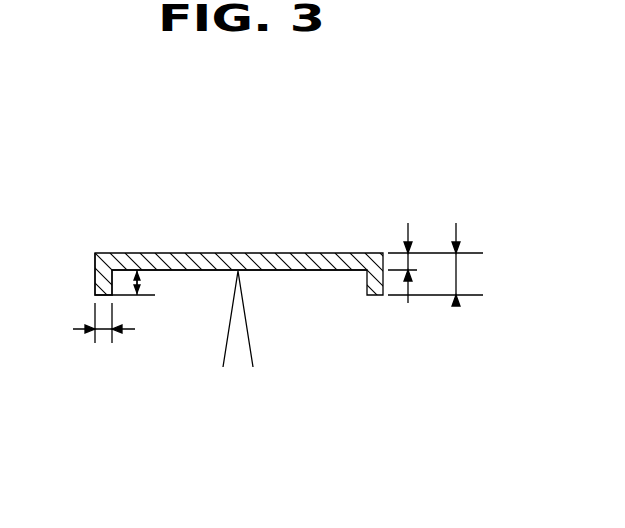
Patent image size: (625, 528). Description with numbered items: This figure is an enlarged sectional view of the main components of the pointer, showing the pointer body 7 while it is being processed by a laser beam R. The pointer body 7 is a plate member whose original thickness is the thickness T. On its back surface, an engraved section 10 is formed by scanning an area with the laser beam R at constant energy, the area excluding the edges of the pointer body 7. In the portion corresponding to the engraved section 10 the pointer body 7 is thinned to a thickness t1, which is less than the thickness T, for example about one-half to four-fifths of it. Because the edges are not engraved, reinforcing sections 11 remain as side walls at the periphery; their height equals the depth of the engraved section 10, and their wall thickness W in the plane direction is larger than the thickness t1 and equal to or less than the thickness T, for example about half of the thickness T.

The pointer body 7 is at (264, 252).
The engraved section 10 is at (303, 271).
The reinforcing section 11 is at (97, 281).
The wall thickness of reinforcing section W is at (100, 331).
The laser beam R is at (224, 349).
The thickness of engraved portion t1 is at (435, 263).
The thickness of plate member T is at (463, 264).